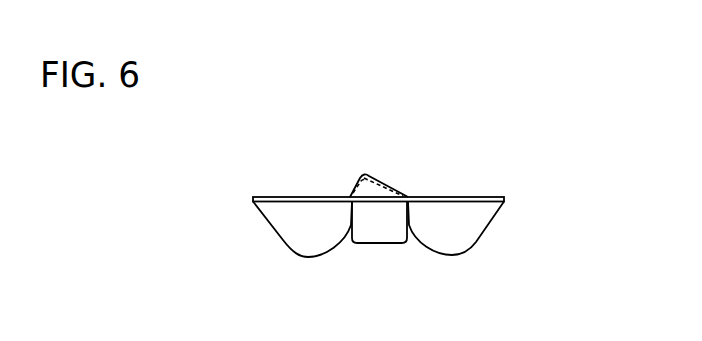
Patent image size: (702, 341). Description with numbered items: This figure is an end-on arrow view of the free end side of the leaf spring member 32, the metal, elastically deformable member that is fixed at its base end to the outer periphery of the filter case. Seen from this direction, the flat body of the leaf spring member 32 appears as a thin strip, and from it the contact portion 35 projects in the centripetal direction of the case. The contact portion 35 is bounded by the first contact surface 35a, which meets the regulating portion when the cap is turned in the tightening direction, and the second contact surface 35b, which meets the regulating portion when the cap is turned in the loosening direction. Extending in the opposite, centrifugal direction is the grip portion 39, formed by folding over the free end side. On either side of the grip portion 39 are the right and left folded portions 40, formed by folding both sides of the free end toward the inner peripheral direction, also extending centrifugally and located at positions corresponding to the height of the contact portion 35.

The leaf spring member 32 is at (493, 196).
The contact portion 35 is at (371, 190).
The first contact surface 35a is at (393, 186).
The second contact surface 35b is at (351, 188).
The grip portion 39 is at (378, 230).
The folded portions 40 is at (283, 228).